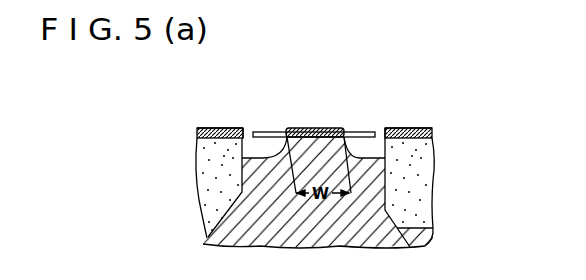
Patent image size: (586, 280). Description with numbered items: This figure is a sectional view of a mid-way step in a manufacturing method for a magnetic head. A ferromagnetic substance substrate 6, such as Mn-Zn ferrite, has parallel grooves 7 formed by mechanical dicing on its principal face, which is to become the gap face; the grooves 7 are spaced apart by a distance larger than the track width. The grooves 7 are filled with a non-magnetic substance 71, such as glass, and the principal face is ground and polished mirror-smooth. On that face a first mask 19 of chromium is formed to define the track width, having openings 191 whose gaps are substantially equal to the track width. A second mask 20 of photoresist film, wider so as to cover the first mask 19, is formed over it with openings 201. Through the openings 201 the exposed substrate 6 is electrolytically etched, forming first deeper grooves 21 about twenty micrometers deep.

The ferromagnetic substance substrate 6 is at (333, 228).
The groove 7 is at (420, 230).
The non-magnetic substance 71 is at (415, 195).
The first mask 19 is at (310, 131).
The opening 191 is at (287, 130).
The second mask 20 is at (269, 132).
The opening 201 is at (247, 127).
The first deeper groove 21 is at (364, 137).